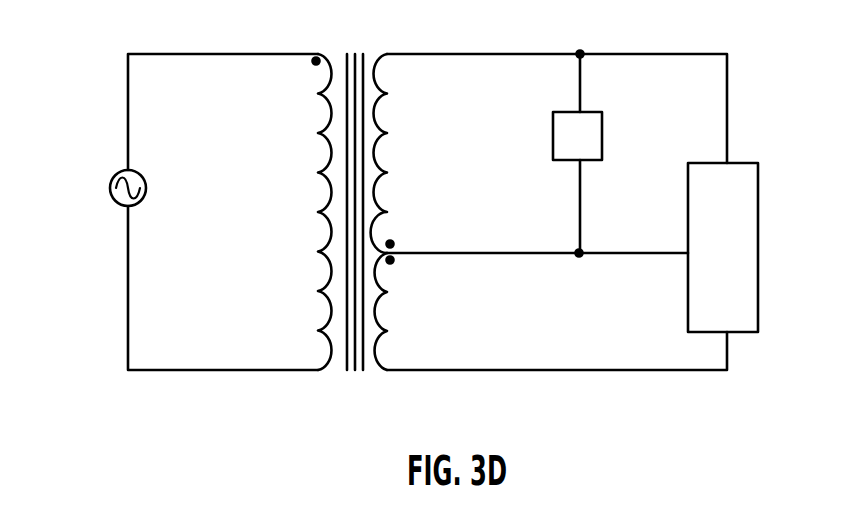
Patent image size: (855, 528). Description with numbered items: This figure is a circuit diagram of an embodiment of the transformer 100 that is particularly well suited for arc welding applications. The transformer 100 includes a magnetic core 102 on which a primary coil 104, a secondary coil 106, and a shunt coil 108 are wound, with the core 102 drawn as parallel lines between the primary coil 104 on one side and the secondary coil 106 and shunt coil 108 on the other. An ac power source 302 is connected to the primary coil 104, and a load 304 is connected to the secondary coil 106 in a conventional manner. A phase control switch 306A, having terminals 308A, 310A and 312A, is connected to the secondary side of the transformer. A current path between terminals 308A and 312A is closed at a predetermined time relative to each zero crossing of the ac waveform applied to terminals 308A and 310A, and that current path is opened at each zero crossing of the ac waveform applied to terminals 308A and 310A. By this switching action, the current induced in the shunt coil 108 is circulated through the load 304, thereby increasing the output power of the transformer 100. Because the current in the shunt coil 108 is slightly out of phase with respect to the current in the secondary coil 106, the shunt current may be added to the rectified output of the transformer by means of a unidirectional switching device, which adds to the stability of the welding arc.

The transformer 100 is at (195, 390).
The magnetic core 102 is at (365, 372).
The primary coil 104 is at (322, 197).
The secondary coil 106 is at (377, 143).
The shunt coil 108 is at (382, 305).
The ac power source 302 is at (111, 182).
The load 304 is at (602, 135).
The phase control switch 306A is at (766, 248).
The terminal 308A is at (718, 316).
The terminal 310A is at (717, 254).
The terminal 312A is at (718, 182).